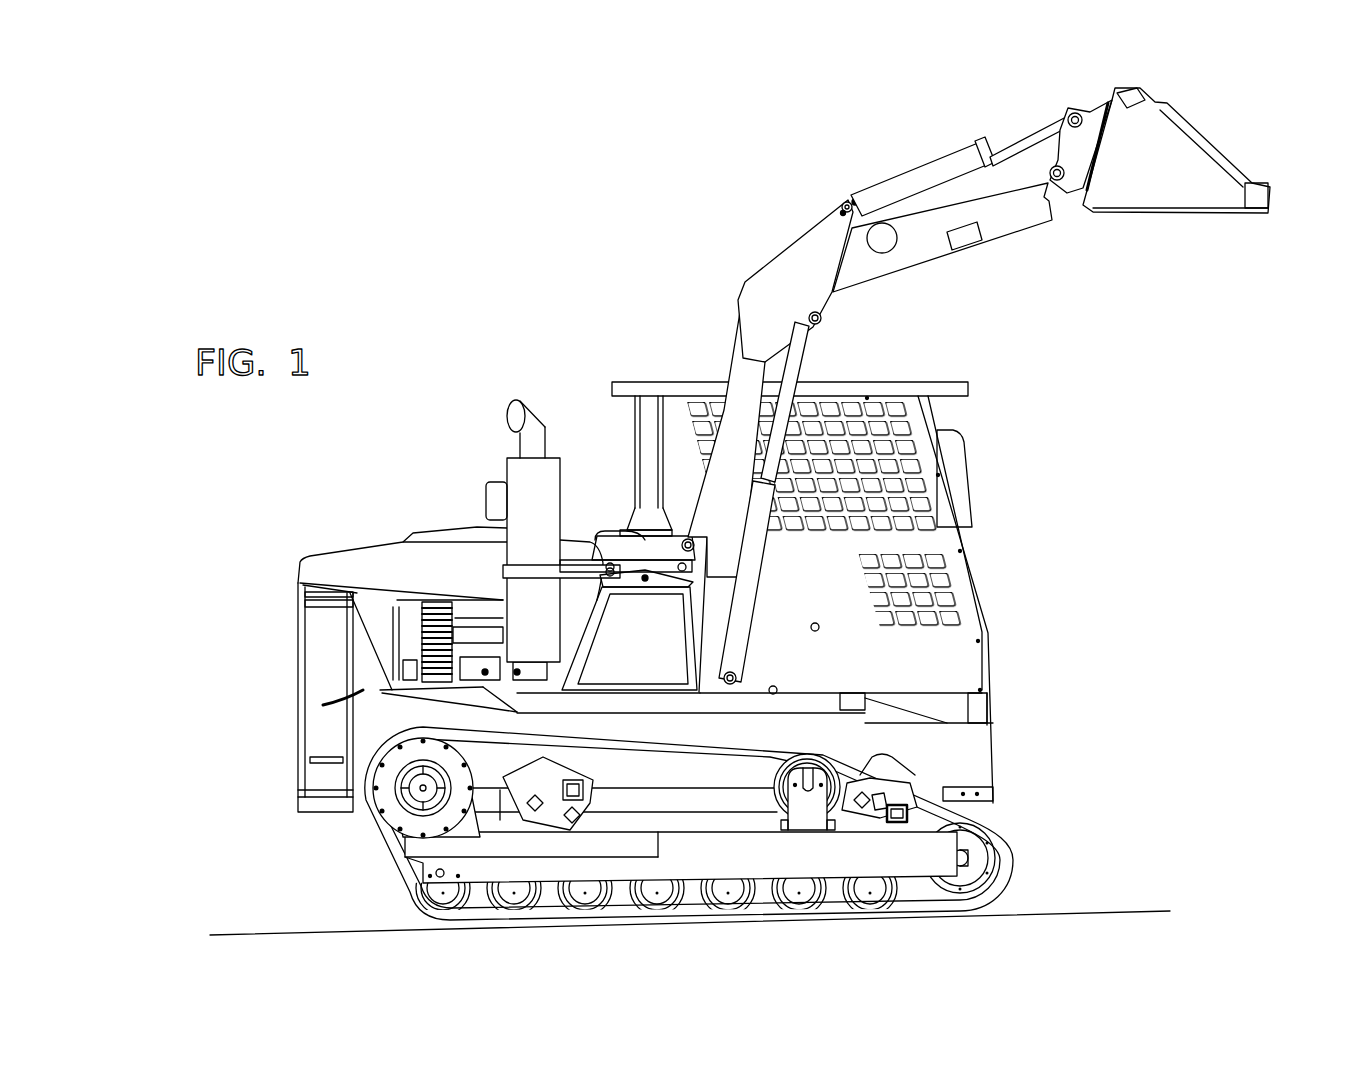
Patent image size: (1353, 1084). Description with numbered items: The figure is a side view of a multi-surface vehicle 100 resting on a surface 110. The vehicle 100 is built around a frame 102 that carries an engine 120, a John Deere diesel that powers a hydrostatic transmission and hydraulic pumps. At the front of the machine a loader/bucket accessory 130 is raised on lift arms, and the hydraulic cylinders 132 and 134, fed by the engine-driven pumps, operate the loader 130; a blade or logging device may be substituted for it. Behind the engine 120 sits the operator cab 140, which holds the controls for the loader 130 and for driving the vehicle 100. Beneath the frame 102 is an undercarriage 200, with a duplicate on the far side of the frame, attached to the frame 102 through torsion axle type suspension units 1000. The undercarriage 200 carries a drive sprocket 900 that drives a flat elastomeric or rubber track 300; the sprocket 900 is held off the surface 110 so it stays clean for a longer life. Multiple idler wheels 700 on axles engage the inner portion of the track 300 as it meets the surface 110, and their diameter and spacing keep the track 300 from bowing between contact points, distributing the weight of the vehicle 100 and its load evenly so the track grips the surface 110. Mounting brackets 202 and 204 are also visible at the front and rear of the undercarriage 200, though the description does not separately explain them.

The multi-surface vehicle 100 is at (458, 277).
The frame 102 is at (320, 808).
The surface 110 is at (1088, 959).
The engine 120 is at (413, 610).
The loader/bucket accessory 130 is at (1175, 188).
The hydraulic cylinder 132 is at (740, 605).
The hydraulic cylinder 134 is at (908, 185).
The operator cab 140 is at (947, 590).
The undercarriage 200 is at (757, 866).
The front mounting bracket 202 is at (585, 785).
The rear mounting bracket 204 is at (903, 807).
The track 300 is at (1010, 843).
The idler wheels 700 is at (578, 897).
The drive sprocket 900 is at (393, 827).
The torsion axle type suspension units 1000 is at (520, 823).